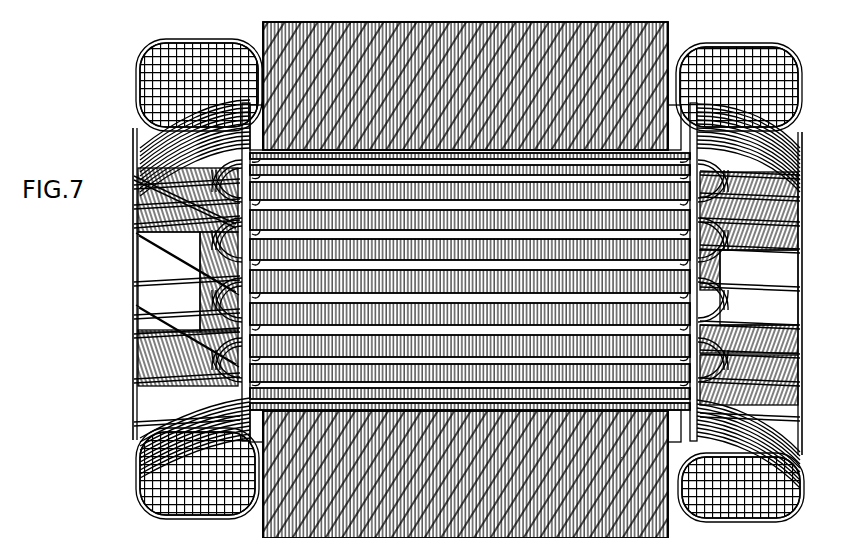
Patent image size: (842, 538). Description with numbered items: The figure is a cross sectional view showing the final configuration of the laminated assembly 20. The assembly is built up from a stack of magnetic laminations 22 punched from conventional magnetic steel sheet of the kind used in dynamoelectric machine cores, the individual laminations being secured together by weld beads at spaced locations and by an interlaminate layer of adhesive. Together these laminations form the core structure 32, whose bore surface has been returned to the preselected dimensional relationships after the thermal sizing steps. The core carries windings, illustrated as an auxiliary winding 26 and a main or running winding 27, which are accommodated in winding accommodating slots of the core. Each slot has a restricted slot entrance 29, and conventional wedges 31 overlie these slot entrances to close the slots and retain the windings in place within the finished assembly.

The laminated assembly 20 is at (126, 469).
The magnetic laminations 22 is at (266, 513).
The auxiliary winding 26 is at (160, 353).
The main or running winding 27 is at (175, 73).
The restricted slot entrance 29 is at (385, 358).
The wedge 31 is at (258, 100).
The core structure 32 is at (481, 100).